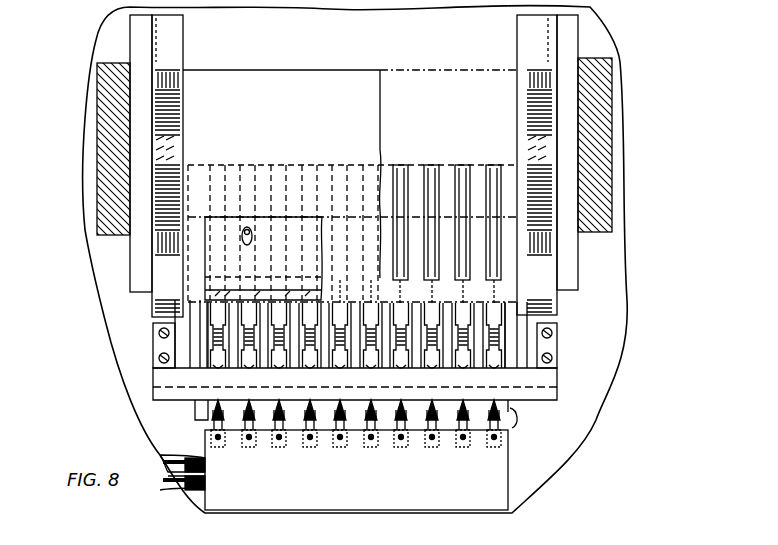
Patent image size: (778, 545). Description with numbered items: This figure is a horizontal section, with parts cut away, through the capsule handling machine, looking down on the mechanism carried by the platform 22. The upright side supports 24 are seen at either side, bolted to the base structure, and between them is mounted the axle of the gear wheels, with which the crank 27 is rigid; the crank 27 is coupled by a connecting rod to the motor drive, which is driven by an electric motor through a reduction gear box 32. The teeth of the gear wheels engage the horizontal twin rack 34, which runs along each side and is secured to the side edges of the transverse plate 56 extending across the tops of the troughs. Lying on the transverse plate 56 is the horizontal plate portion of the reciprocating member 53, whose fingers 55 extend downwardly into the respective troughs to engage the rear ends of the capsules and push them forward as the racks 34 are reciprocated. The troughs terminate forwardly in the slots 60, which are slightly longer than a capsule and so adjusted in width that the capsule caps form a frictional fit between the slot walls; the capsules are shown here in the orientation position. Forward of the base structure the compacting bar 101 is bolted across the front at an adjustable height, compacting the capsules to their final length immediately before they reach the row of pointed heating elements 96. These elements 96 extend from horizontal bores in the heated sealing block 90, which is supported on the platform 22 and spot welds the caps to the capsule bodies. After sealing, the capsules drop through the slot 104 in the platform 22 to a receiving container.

The platform 22 is at (598, 342).
The upright side supports 24 is at (108, 108).
The crank 27 is at (371, 366).
The reduction gear box 32 is at (432, 366).
The horizontal twin rack 34 is at (165, 175).
The reciprocating member 53 is at (288, 254).
The fingers 55 is at (395, 268).
The transverse plate 56 is at (290, 132).
The slots 60 is at (279, 366).
The heated sealing block 90 is at (352, 492).
The heating elements 96 is at (310, 426).
The compacting bar 101 is at (520, 403).
The slot 104 is at (514, 428).